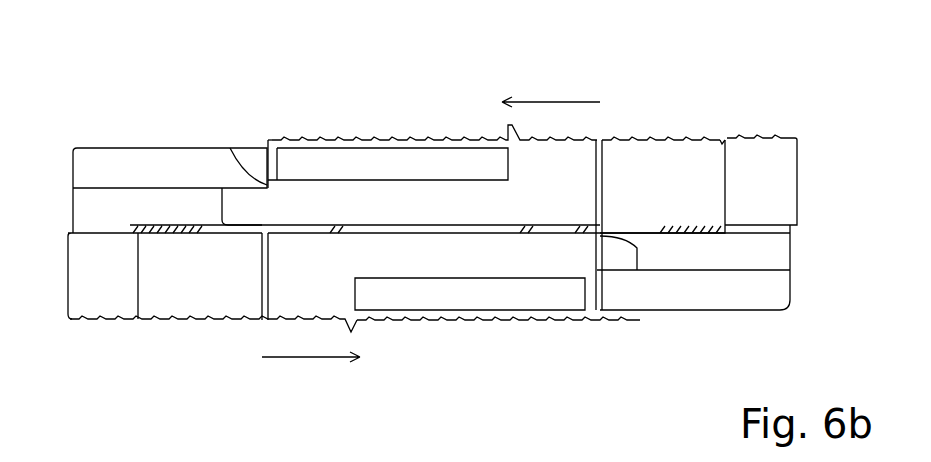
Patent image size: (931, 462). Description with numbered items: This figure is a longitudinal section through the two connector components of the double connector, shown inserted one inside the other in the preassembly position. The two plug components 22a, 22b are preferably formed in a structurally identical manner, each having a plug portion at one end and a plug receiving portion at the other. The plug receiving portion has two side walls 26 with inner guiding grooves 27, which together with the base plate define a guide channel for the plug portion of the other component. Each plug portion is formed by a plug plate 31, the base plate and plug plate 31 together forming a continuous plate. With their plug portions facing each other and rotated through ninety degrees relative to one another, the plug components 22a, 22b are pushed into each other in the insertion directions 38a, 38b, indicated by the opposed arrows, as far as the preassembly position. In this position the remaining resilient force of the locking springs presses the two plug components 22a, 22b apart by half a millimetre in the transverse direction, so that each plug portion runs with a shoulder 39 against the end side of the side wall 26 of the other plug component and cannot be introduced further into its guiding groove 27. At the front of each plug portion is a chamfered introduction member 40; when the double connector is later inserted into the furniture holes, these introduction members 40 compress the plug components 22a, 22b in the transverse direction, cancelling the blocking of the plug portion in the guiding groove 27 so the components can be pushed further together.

The plug component 22a is at (108, 128).
The plug component 22b is at (770, 126).
The side wall 26 is at (183, 162).
The guiding groove 27 is at (147, 205).
The plug plate 31 is at (300, 195).
The insertion direction 38a is at (325, 358).
The insertion direction 38b is at (540, 102).
The shoulder 39 is at (263, 186).
The chamfered introduction member 40 is at (240, 131).